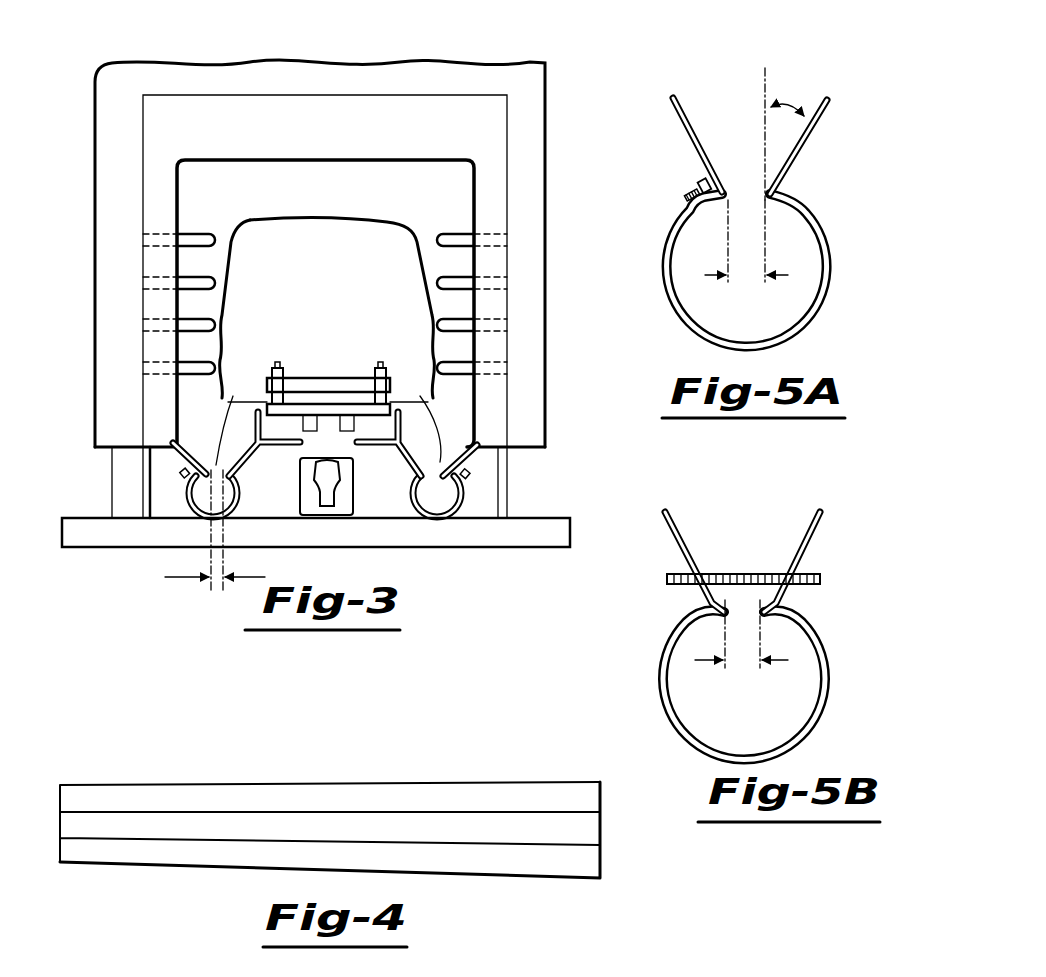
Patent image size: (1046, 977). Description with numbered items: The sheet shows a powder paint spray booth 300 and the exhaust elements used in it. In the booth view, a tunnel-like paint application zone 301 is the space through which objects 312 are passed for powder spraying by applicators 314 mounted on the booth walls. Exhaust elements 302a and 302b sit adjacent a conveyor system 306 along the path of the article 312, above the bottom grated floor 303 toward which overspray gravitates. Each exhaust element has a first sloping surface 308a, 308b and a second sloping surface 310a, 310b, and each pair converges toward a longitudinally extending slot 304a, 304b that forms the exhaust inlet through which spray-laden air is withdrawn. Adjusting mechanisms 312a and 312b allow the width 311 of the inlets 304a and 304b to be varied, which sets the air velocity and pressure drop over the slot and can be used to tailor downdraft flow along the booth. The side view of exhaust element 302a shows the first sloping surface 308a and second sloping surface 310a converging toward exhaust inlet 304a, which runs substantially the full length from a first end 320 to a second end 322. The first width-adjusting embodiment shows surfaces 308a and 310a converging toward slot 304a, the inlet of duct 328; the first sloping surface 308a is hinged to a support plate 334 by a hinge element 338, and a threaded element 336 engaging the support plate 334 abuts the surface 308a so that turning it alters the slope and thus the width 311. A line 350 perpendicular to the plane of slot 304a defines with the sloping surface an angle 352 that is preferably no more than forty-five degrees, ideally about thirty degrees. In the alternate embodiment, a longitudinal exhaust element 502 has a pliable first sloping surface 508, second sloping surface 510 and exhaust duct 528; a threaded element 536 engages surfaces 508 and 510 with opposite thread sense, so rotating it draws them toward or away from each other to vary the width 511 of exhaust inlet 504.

In FIG. 3, the paint spray booth 300 is at (88, 120).
In FIG. 3, the paint application zone 301 is at (345, 197).
In FIG. 3, the exhaust element 302a is at (164, 497).
In FIG. 4, the exhaust element 302a is at (135, 778).
In FIG. 5A, the exhaust element 302a is at (830, 212).
In FIG. 3, the exhaust element 302b is at (495, 502).
In FIG. 3, the grated floor 303 is at (290, 522).
In FIG. 3, the exhaust inlet 304a is at (252, 388).
In FIG. 4, the exhaust inlet 304a is at (482, 830).
In FIG. 5A, the exhaust inlet 304a is at (745, 188).
In FIG. 3, the exhaust inlet 304b is at (403, 388).
In FIG. 3, the conveyor system 306 is at (336, 436).
In FIG. 3, the first sloping surface 308a is at (186, 448).
In FIG. 4, the first sloping surface 308a is at (193, 802).
In FIG. 5A, the first sloping surface 308a is at (675, 96).
In FIG. 3, the first sloping surface 308b is at (402, 490).
In FIG. 3, the second sloping surface 310a is at (236, 462).
In FIG. 4, the second sloping surface 310a is at (148, 850).
In FIG. 5A, the second sloping surface 310a is at (822, 100).
In FIG. 3, the second sloping surface 310b is at (470, 447).
In FIG. 3, the width 311 is at (205, 539).
In FIG. 5A, the width 311 is at (755, 252).
In FIG. 3, the object 312 is at (430, 178).
In FIG. 3, the adjusting mechanism 312a is at (180, 477).
In FIG. 3, the adjusting mechanism 312b is at (480, 478).
In FIG. 3, the powder spray applicator 314 is at (180, 240).
In FIG. 4, the first end 320 is at (58, 852).
In FIG. 4, the second end 322 is at (602, 862).
In FIG. 5A, the duct 328 is at (800, 338).
In FIG. 5A, the support plate 334 is at (700, 180).
In FIG. 5A, the threaded element 336 is at (688, 196).
In FIG. 5A, the hinge element 338 is at (712, 168).
In FIG. 5A, the line 350 is at (785, 60).
In FIG. 5A, the angle 352 is at (795, 100).
In FIG. 5B, the longitudinal exhaust element 502 is at (825, 636).
In FIG. 5B, the exhaust inlet 504 is at (740, 598).
In FIG. 5B, the first sloping surface 508 is at (690, 532).
In FIG. 5B, the second sloping surface 510 is at (782, 528).
In FIG. 5B, the width 511 is at (730, 646).
In FIG. 5B, the exhaust duct 528 is at (796, 734).
In FIG. 5B, the threaded element 536 is at (816, 576).